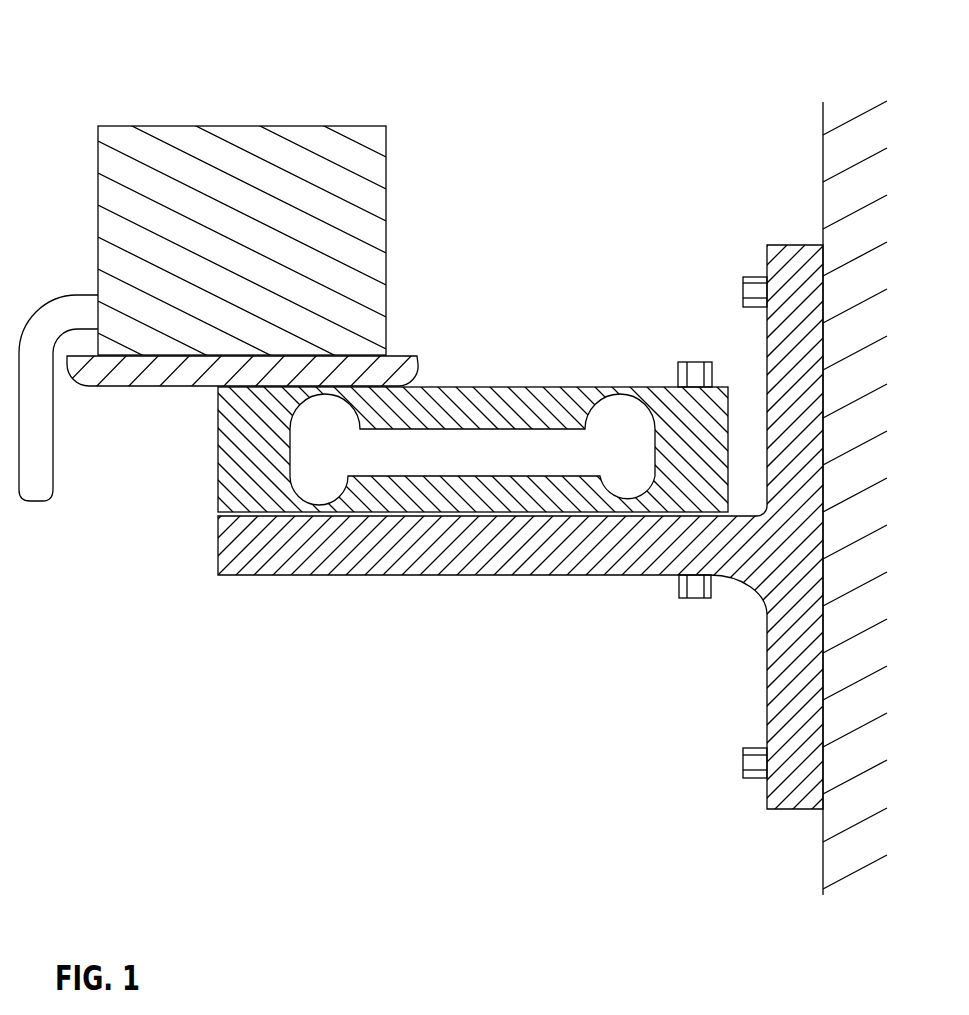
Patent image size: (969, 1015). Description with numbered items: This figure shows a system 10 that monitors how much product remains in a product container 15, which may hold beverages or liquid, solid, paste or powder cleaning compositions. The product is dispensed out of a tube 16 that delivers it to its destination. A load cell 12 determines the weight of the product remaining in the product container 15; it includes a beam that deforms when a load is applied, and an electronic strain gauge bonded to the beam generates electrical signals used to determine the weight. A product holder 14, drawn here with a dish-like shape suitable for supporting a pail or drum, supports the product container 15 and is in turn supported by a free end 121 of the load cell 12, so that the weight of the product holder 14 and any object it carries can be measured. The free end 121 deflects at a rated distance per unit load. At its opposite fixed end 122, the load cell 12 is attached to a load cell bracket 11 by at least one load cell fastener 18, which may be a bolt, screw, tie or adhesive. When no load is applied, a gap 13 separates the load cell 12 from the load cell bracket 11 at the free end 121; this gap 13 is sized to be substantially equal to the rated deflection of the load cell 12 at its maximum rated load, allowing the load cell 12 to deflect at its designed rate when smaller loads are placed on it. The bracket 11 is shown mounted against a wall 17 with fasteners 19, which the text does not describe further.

The system 10 is at (472, 52).
The load cell bracket 11 is at (367, 543).
The load cell 12 is at (218, 449).
The free end 121 is at (238, 406).
The fixed end 122 is at (672, 400).
The gap 13 is at (190, 517).
The product holder 14 is at (395, 370).
The product container 15 is at (357, 198).
The tube 16 is at (60, 313).
The wall 17 is at (847, 142).
The load cell fastener 18 is at (695, 368).
The bolts fastening bracket to wall 19 is at (752, 292).